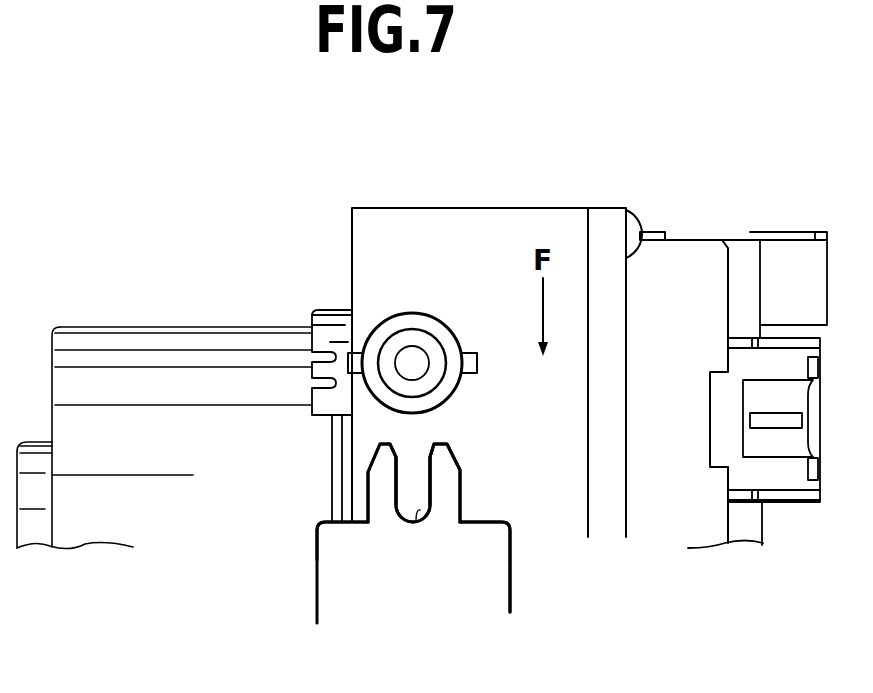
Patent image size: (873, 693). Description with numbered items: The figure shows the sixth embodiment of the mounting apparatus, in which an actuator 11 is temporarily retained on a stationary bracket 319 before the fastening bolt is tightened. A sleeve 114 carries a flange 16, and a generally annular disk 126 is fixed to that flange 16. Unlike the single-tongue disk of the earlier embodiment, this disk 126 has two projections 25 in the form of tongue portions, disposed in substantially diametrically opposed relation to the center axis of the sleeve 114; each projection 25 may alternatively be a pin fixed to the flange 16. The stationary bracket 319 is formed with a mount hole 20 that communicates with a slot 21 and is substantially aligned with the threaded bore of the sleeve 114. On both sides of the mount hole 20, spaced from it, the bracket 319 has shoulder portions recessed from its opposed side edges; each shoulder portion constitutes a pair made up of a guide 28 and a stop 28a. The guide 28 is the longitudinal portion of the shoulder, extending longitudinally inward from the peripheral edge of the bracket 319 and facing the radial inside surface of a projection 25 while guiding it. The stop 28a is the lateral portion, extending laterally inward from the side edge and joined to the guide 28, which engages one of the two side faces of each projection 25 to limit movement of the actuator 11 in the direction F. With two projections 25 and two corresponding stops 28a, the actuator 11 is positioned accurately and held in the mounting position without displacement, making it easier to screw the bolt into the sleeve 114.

The actuator 11 is at (508, 222).
The flange 16 is at (447, 327).
The generally annular disk 126 is at (438, 353).
The sleeve 114 is at (412, 330).
The projections 25 is at (363, 356).
The mount hole 20 is at (417, 522).
The guides 28 is at (368, 487).
The stops 28a is at (350, 523).
The slot 21 is at (430, 445).
The stationary bracket 319 is at (512, 568).